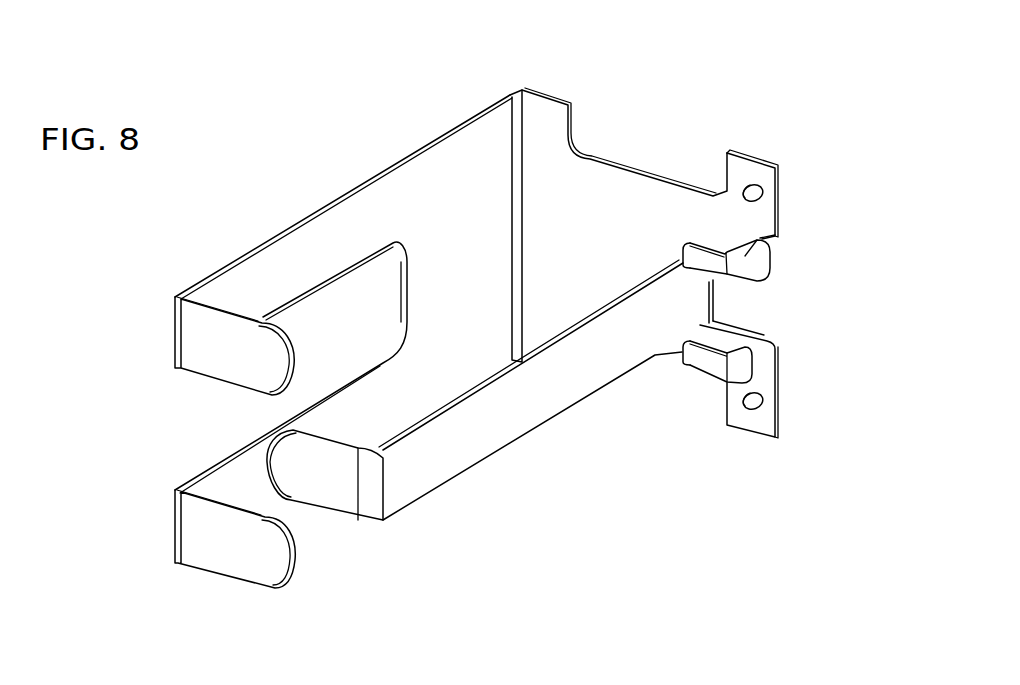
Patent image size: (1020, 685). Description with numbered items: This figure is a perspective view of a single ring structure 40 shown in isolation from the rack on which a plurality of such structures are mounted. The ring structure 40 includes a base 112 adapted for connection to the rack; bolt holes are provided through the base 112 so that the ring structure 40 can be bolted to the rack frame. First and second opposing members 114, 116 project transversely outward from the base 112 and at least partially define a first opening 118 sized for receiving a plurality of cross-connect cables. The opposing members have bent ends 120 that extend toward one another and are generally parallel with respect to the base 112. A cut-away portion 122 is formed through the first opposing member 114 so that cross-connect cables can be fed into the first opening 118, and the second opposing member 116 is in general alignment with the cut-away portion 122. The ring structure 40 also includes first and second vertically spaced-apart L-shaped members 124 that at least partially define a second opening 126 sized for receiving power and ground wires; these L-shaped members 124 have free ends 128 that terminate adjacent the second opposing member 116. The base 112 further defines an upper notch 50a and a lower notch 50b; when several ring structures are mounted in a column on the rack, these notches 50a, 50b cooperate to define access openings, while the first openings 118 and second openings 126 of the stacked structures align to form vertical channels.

The ring structure 40 is at (674, 91).
The upper notch 50a is at (597, 153).
The lower notch 50b is at (723, 382).
The base 112 is at (618, 164).
The first opposing member 114 is at (432, 204).
The second opposing member 116 is at (478, 428).
The first opening 118 is at (476, 330).
The bent ends 120 is at (227, 360).
The cut-away portion 122 is at (335, 334).
The L-shaped members 124 is at (742, 269).
The second opening 126 is at (729, 238).
The free ends 128 is at (682, 256).